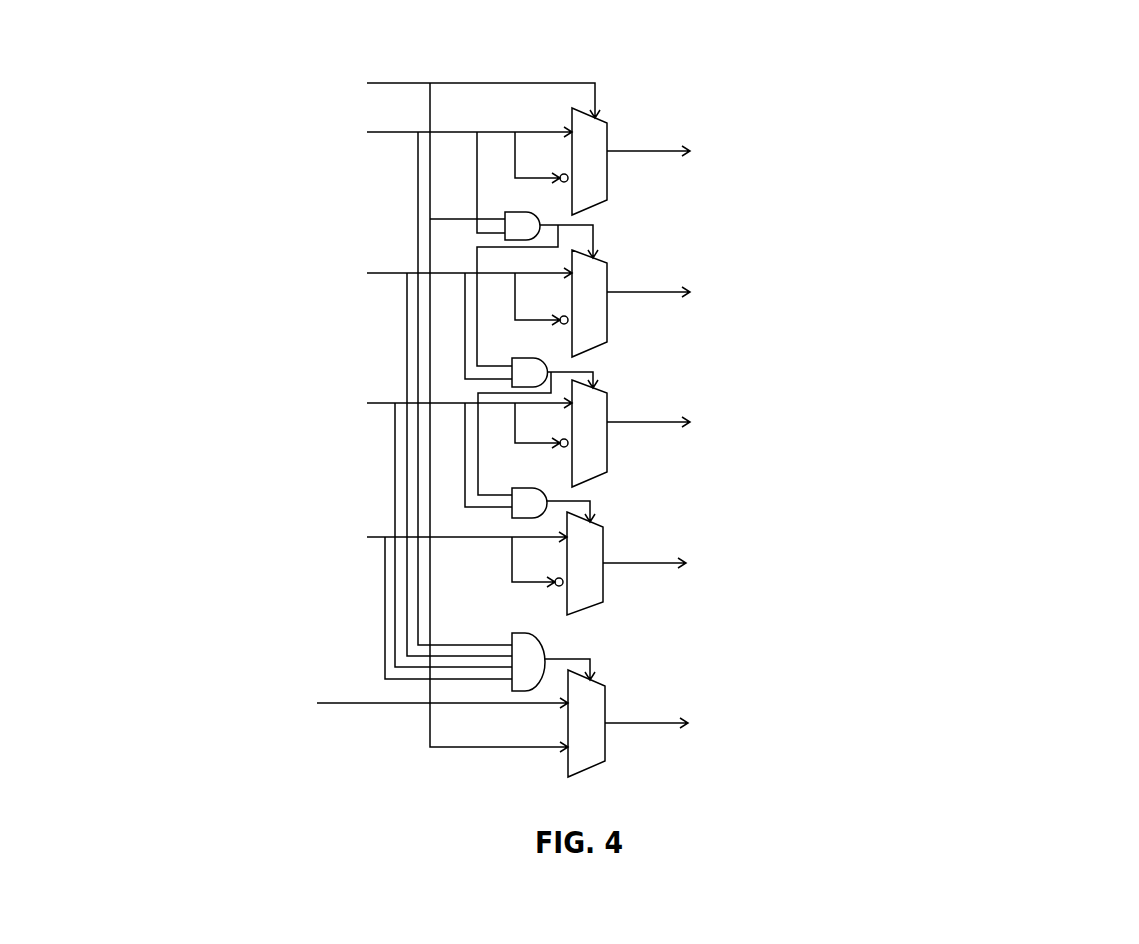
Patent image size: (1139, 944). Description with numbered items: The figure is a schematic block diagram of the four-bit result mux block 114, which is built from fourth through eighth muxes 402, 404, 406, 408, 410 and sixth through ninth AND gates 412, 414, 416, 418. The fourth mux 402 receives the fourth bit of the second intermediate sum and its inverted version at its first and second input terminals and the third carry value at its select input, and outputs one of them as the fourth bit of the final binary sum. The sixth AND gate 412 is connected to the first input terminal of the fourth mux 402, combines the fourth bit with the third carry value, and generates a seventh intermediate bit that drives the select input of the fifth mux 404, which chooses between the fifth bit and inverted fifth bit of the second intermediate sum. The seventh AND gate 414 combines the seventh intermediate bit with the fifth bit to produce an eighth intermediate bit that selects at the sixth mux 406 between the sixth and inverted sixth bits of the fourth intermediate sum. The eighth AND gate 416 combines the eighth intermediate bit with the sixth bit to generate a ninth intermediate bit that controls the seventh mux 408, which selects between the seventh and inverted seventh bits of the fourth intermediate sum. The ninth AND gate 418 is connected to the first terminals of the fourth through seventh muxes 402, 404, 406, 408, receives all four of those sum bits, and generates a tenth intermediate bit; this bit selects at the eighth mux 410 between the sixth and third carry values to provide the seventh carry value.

The four-bit result mux block 114 is at (1070, 76).
The fourth mux 402 is at (604, 118).
The fifth mux 404 is at (604, 265).
The sixth mux 406 is at (600, 390).
The seventh mux 408 is at (600, 524).
The eighth mux 410 is at (602, 683).
The sixth AND gate 412 is at (520, 212).
The seventh AND gate 414 is at (523, 358).
The eighth AND gate 416 is at (518, 490).
The ninth AND gate 418 is at (546, 646).